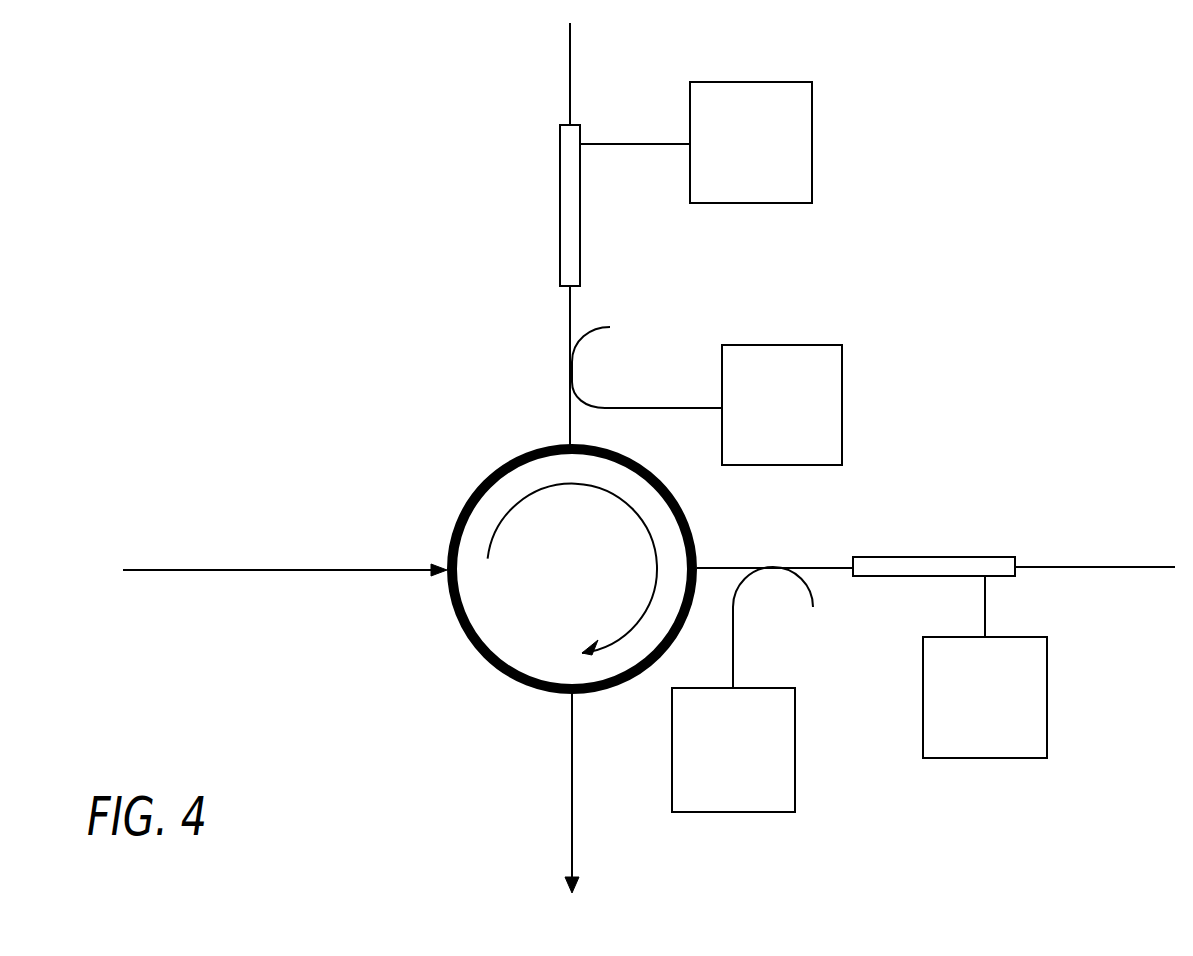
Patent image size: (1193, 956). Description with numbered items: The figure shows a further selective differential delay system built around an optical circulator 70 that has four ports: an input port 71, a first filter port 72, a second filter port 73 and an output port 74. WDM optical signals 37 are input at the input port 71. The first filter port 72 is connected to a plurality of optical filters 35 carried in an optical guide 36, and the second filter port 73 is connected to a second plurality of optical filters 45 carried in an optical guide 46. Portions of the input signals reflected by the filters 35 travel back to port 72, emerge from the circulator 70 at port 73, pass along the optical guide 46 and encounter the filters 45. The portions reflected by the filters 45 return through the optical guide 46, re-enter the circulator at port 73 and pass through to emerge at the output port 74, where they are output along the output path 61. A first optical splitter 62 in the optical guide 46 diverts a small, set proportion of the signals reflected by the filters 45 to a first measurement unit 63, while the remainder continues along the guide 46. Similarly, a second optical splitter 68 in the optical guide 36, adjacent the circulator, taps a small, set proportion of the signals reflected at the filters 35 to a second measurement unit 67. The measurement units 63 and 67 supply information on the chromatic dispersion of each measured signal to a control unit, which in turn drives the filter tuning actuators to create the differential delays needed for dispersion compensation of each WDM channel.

The plurality of optical filters 35 is at (560, 222).
The optical guide 36 is at (568, 87).
The WDM optical signals 37 is at (200, 570).
The second plurality of optical filters 45 is at (890, 557).
The optical guide 46 is at (1095, 567).
The output fiber from circulator 61 is at (572, 773).
The first optical splitter 62 is at (770, 587).
The first measurement unit 63 is at (747, 760).
The second measurement unit 67 is at (796, 418).
The second optical splitter 68 is at (605, 363).
The optical circulator 70 is at (585, 580).
The input port 71 is at (437, 565).
The first filter port 72 is at (567, 443).
The second filter port 73 is at (712, 568).
The output port 74 is at (568, 697).